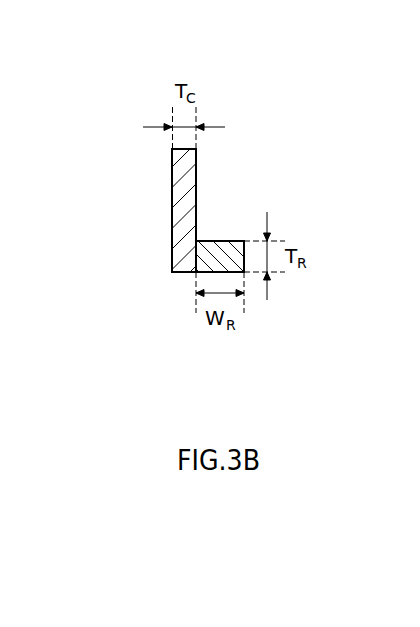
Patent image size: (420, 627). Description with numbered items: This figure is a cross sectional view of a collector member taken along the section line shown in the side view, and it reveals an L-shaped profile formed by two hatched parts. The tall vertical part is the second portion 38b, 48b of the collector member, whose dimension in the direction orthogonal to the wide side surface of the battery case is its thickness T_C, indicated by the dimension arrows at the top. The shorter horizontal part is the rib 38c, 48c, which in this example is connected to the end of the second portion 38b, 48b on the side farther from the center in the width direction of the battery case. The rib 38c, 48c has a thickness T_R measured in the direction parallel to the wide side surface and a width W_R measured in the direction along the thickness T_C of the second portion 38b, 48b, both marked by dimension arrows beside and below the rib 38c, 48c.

The second portion 38b is at (140, 220).
The second portion 48b is at (173, 245).
The rib 38c is at (237, 238).
The rib 48c is at (223, 240).